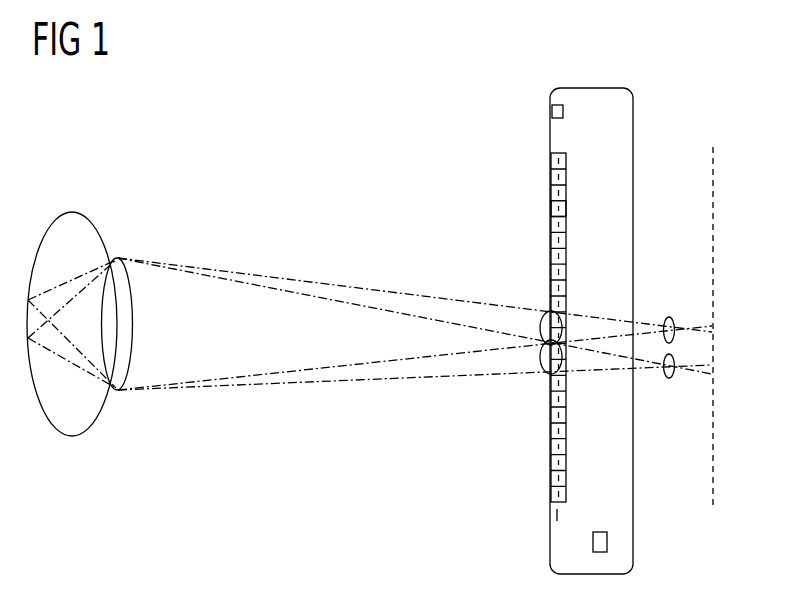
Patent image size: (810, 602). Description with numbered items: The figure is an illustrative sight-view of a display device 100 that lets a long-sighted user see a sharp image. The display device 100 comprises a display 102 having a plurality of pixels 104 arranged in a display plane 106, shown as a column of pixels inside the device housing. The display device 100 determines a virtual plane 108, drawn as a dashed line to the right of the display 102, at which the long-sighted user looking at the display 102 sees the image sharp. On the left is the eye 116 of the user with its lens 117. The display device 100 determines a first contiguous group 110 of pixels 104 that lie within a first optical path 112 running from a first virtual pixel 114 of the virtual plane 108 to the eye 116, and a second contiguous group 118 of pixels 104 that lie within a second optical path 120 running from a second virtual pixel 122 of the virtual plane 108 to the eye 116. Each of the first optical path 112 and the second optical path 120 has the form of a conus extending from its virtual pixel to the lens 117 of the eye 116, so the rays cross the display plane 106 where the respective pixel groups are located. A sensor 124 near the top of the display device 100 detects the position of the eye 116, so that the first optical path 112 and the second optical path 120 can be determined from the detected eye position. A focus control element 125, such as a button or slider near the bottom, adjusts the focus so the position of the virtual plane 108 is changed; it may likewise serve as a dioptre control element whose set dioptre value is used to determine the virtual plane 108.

The display device 100 is at (592, 88).
The display 102 is at (567, 153).
The pixels 104 is at (550, 215).
The display plane 106 is at (556, 517).
The virtual plane 108 is at (715, 490).
The first contiguous group of pixels 110 is at (541, 318).
The first optical path 112 is at (669, 317).
The first virtual pixel 114 is at (712, 330).
The eye 116 is at (77, 212).
The lens 117 is at (133, 318).
The second contiguous group of pixels 118 is at (542, 371).
The second optical path 120 is at (669, 378).
The second virtual pixel 122 is at (712, 370).
The sensor 124 is at (552, 111).
The focus control element 125 is at (607, 542).